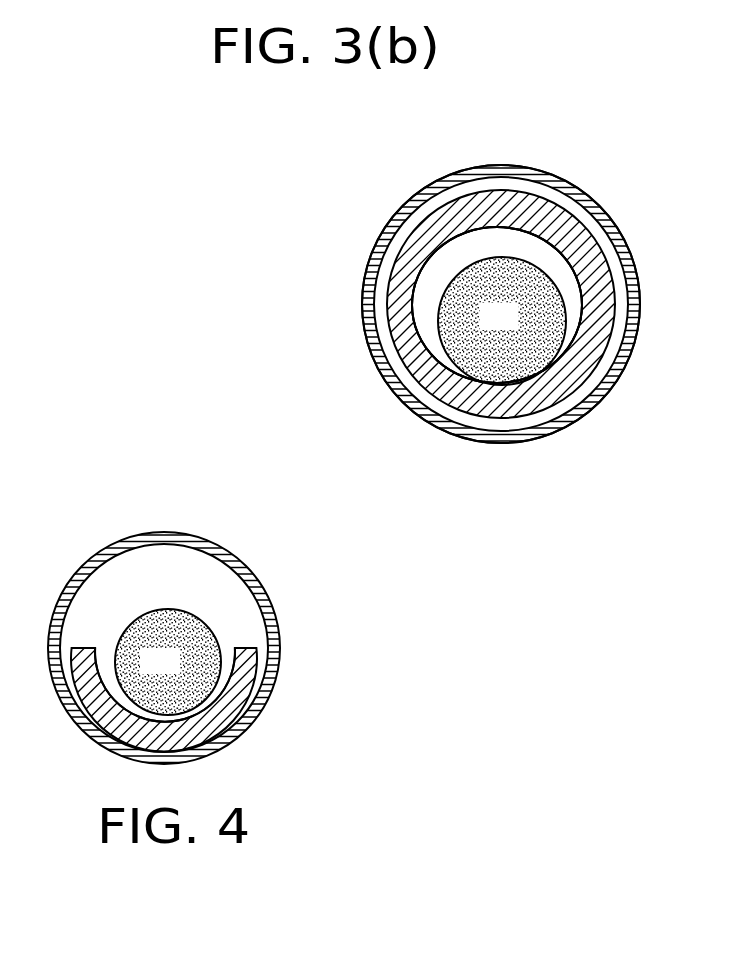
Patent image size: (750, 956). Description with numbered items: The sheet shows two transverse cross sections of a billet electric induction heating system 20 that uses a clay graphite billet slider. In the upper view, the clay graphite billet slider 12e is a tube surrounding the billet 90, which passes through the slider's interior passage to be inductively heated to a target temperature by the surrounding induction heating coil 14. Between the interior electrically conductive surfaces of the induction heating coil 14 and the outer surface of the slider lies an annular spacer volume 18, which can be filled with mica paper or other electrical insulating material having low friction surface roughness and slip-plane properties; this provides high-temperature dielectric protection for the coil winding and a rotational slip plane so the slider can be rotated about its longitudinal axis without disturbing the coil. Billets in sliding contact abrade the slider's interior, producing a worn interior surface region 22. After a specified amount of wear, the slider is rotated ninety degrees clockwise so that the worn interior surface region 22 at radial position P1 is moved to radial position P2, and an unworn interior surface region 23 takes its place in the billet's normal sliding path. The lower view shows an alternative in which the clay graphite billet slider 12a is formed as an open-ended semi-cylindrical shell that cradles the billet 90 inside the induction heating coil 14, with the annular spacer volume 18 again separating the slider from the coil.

The billet electric induction heating system 20 is at (636, 122).
The induction heating coil 14 is at (637, 270).
In FIG. 4, the induction heating coil 14 is at (270, 603).
The annular spacer volume 18 is at (573, 214).
In FIG. 4, the annular spacer volume 18 is at (253, 695).
The clay graphite billet slider 12e is at (601, 262).
In FIG. 4, the clay graphite billet slider 12a is at (209, 718).
The worn interior surface region 22 is at (405, 279).
The unworn interior surface region 23 is at (497, 396).
The billet 90 is at (484, 329).
In FIG. 4, the billet 90 is at (176, 672).
The radial position P1 is at (293, 318).
The radial position P2 is at (336, 305).